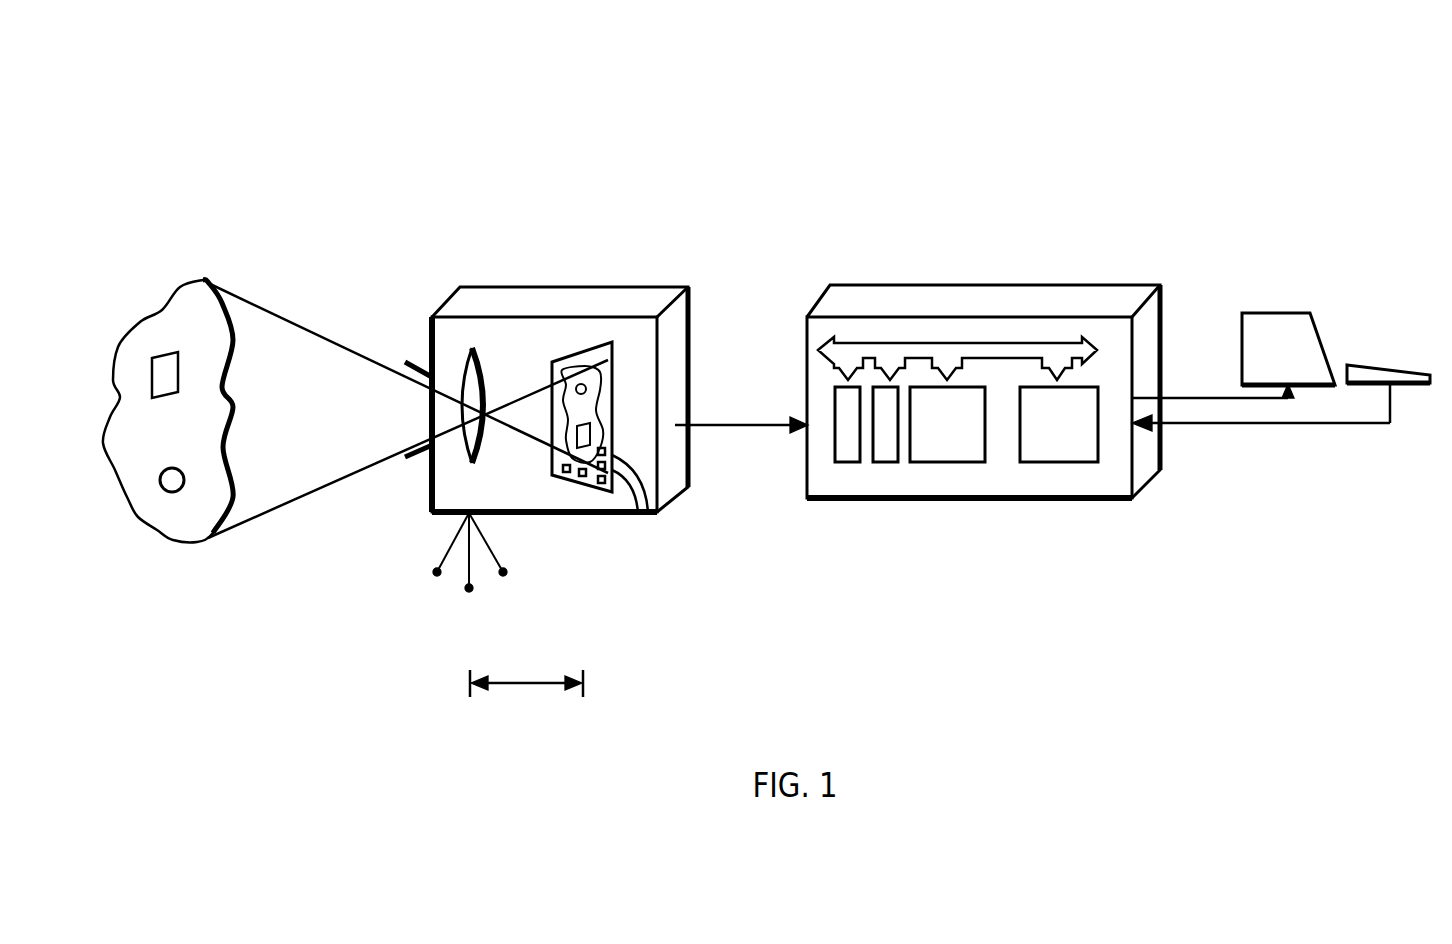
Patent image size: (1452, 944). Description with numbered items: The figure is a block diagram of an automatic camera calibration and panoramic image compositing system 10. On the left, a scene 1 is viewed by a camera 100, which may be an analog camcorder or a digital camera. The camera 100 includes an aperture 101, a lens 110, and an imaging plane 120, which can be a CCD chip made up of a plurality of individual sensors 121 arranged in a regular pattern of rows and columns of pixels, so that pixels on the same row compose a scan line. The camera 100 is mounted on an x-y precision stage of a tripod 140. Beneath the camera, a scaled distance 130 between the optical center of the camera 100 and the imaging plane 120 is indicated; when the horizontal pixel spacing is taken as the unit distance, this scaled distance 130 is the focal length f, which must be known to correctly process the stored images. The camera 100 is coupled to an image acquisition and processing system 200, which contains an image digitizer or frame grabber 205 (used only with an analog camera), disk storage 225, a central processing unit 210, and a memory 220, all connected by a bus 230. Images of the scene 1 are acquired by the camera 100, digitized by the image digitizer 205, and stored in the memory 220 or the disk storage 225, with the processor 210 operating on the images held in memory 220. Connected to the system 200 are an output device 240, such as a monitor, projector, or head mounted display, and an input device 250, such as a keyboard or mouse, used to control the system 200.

The automatic camera calibration and panoramic image compositing system 10 is at (752, 188).
The scene 1 is at (172, 300).
The camera 100 is at (622, 300).
The lens 110 is at (462, 360).
The aperture 101 is at (424, 448).
The imaging plane 120 is at (575, 478).
The individual sensors 121 is at (643, 512).
The scaled distance 130 is at (513, 688).
The tripod 140 is at (448, 545).
The image acquisition and processing system 200 is at (928, 292).
The bus 230 is at (1058, 343).
The image digitizer 205 is at (848, 464).
The disk storage 225 is at (885, 464).
The central processing unit 210 is at (960, 464).
The memory 220 is at (1055, 464).
The output device 240 is at (1272, 313).
The input device 250 is at (1378, 365).